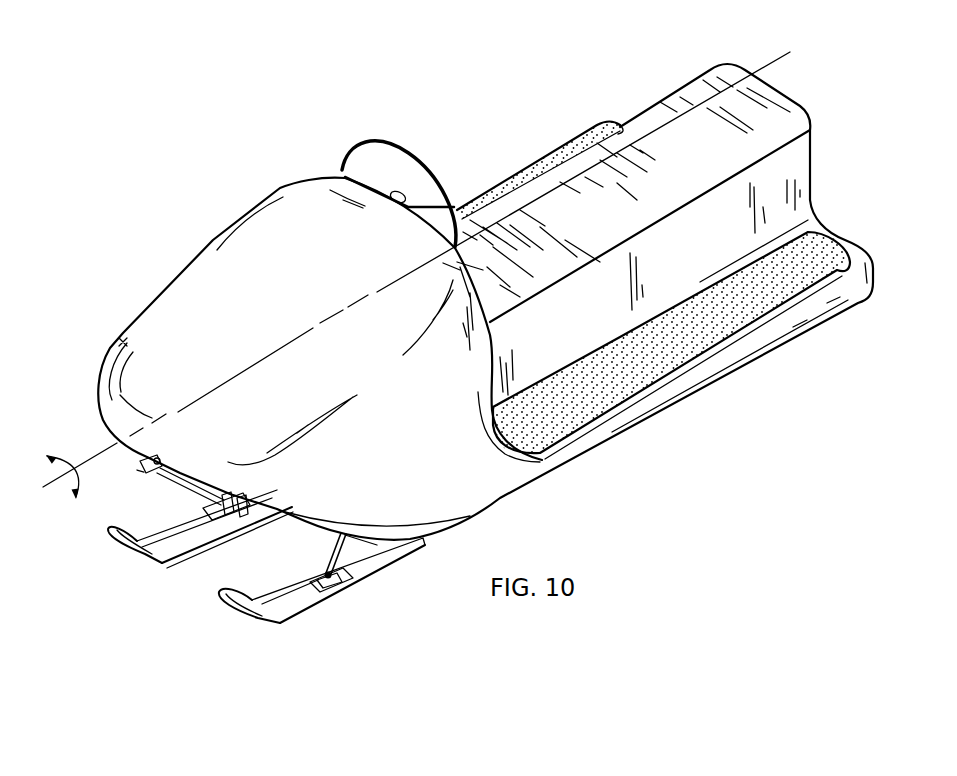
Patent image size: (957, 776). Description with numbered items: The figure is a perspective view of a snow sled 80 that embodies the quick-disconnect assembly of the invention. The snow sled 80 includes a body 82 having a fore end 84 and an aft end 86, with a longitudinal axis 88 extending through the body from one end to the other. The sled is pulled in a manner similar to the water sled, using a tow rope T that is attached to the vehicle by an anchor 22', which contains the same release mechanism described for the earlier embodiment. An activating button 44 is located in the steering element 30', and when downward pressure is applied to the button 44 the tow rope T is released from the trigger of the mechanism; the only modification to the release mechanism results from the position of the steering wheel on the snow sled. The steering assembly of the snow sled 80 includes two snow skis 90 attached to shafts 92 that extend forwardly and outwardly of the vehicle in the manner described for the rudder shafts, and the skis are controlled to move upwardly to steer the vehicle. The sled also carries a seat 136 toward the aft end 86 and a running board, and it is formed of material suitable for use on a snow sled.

The snow sled 80 is at (220, 226).
The fore end 84 is at (122, 341).
The aft end 86 is at (777, 84).
The seat 136 is at (648, 148).
The body 82 is at (627, 434).
The steering element 30' is at (378, 165).
The activating button 44 is at (404, 193).
The anchor 22' is at (193, 462).
The longitudinal axis 88 is at (58, 491).
The snow skis 90 is at (183, 566).
The shafts 92 is at (357, 568).
The tow rope T is at (136, 572).